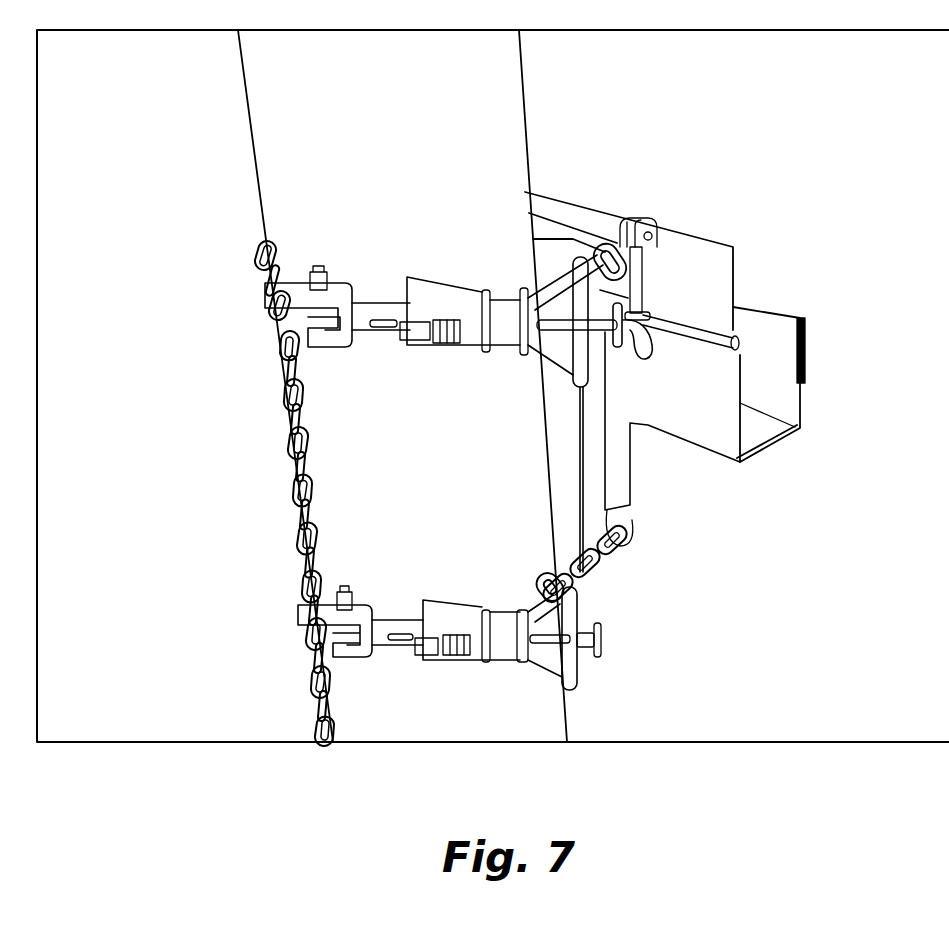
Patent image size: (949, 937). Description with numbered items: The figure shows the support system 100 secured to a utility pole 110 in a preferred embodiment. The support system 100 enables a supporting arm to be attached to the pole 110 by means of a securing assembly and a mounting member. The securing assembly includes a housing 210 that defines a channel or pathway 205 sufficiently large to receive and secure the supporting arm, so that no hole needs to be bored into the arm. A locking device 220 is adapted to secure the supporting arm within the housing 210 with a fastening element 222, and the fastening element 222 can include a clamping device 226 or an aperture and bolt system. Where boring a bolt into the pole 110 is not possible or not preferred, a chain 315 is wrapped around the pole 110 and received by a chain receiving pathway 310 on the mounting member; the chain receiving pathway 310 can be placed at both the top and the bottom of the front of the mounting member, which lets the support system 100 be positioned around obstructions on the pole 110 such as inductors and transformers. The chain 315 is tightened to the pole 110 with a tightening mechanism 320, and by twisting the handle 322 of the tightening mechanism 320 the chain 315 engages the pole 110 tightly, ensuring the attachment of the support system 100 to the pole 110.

The support system 100 is at (806, 155).
The utility pole 110 is at (373, 149).
The pathway 205 is at (753, 370).
The housing 210 is at (808, 350).
The locking device 220 is at (700, 292).
The fastening element 222 is at (630, 335).
The clamping device 226 is at (641, 347).
The chain receiving pathway 310 is at (597, 242).
The chain 315 is at (295, 485).
The tightening mechanism 320 is at (492, 662).
The handle 322 is at (582, 655).